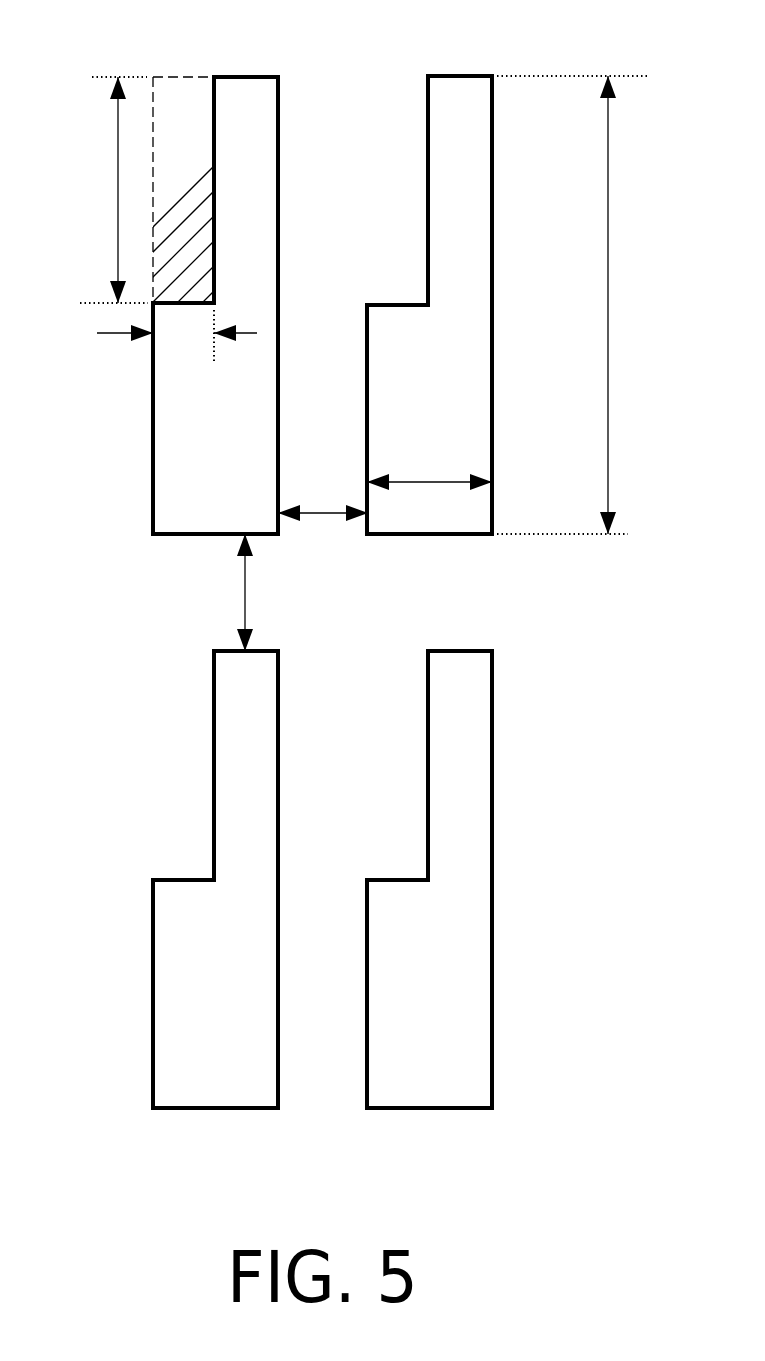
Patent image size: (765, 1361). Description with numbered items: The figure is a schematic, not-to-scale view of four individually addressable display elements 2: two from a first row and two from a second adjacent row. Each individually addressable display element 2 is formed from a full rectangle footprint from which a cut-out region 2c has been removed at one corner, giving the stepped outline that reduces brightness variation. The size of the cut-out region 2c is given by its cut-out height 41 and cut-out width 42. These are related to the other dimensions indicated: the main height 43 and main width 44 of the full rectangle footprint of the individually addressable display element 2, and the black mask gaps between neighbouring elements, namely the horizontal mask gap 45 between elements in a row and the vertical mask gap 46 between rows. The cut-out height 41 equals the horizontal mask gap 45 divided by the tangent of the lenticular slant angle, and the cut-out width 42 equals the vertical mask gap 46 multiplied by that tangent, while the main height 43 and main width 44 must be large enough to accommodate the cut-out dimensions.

The individually addressable display element 2 is at (152, 421).
The cut-out region 2c is at (186, 90).
The cut-out height 41 is at (118, 186).
The cut-out width 42 is at (183, 331).
The main height 43 is at (608, 306).
The main width 44 is at (432, 484).
The horizontal mask gap 45 is at (323, 515).
The vertical mask gap 46 is at (244, 588).